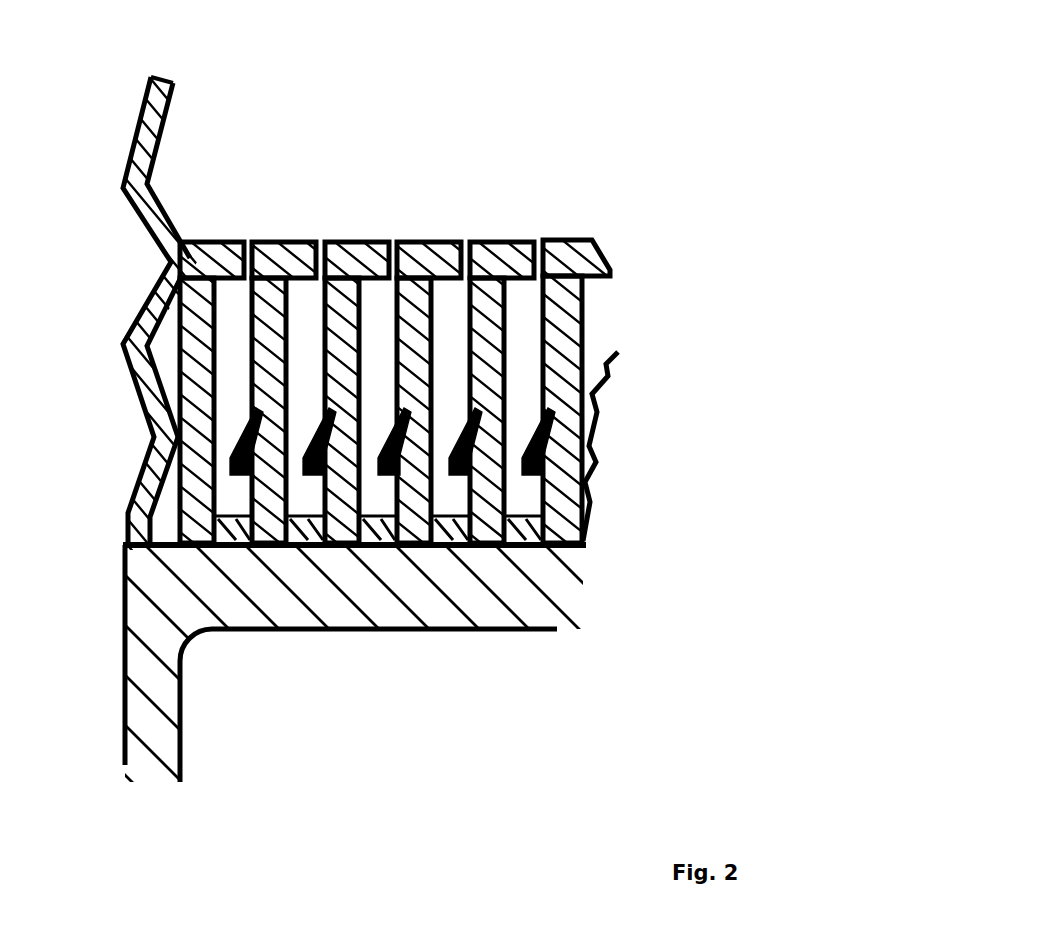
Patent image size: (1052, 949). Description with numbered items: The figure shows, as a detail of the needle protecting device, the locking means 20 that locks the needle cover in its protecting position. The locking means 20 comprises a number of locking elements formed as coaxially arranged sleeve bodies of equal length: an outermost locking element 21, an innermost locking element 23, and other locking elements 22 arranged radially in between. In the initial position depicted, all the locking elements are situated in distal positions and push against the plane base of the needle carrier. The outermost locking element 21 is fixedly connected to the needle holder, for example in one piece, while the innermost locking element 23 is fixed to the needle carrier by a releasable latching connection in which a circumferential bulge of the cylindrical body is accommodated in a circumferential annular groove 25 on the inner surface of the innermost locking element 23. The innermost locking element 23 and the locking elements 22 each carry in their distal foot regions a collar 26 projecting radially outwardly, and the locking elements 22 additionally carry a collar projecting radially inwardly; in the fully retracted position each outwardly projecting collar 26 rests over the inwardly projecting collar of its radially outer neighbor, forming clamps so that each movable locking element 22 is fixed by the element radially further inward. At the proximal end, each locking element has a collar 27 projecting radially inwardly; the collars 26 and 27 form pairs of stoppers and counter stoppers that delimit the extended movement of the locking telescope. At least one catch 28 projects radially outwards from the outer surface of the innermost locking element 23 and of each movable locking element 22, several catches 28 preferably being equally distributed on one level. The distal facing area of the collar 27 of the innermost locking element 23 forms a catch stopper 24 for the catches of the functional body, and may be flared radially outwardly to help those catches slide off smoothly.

The locking means 20 is at (692, 61).
The outermost locking element 21 is at (200, 393).
The locking elements 22 is at (273, 337).
The innermost locking element 23 is at (563, 340).
The catch stopper 24 is at (595, 278).
The circumferential annular groove 25 is at (590, 482).
The collar projecting radially outwardly 26 is at (530, 550).
The collar projecting radially inwardly 27 is at (360, 240).
The catch 28 is at (527, 435).